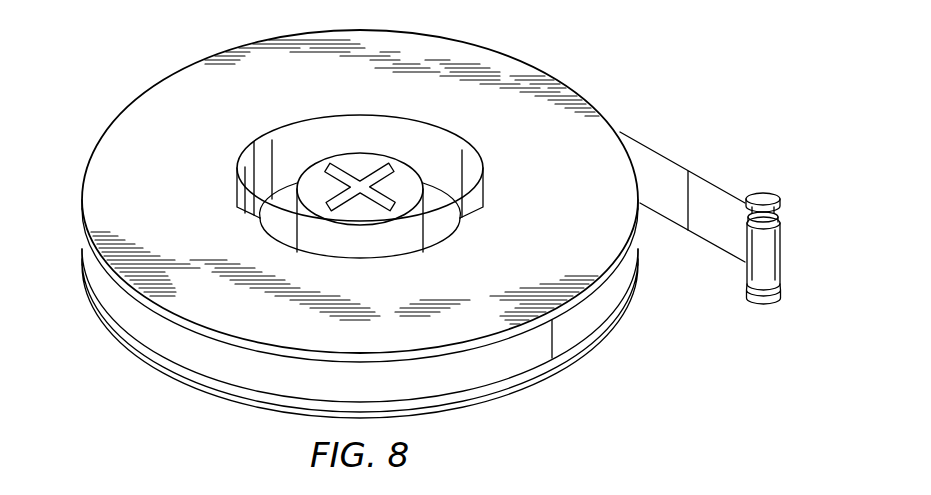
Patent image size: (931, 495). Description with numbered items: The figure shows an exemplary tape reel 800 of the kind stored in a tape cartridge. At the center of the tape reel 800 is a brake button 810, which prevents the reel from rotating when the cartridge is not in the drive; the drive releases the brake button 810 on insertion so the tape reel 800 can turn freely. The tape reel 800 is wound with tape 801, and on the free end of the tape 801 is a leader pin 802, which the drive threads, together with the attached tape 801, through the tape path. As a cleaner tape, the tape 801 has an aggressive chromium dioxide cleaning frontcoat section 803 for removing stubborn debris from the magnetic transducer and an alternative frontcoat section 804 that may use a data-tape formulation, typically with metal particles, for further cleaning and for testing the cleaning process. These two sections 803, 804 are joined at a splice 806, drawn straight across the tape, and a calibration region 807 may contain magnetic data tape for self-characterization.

The tape reel 800 is at (137, 107).
The tape 801 is at (668, 155).
The leader pin 802 is at (770, 188).
The cleaning frontcoat section 803 is at (195, 362).
The alternative frontcoat section 804 is at (607, 300).
The splice 806 is at (558, 343).
The calibration region 807 is at (722, 240).
The brake button 810 is at (354, 157).